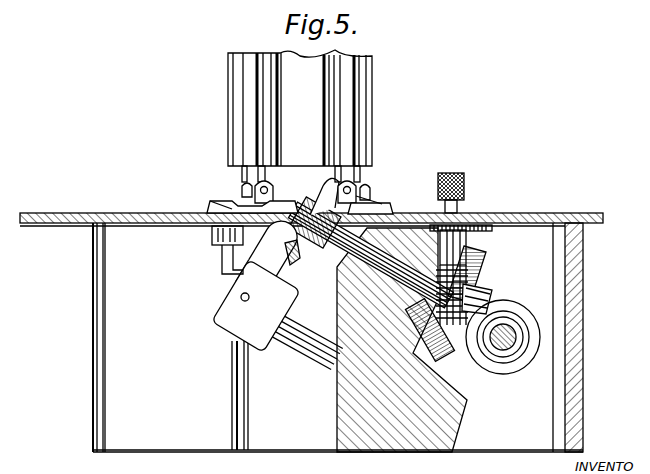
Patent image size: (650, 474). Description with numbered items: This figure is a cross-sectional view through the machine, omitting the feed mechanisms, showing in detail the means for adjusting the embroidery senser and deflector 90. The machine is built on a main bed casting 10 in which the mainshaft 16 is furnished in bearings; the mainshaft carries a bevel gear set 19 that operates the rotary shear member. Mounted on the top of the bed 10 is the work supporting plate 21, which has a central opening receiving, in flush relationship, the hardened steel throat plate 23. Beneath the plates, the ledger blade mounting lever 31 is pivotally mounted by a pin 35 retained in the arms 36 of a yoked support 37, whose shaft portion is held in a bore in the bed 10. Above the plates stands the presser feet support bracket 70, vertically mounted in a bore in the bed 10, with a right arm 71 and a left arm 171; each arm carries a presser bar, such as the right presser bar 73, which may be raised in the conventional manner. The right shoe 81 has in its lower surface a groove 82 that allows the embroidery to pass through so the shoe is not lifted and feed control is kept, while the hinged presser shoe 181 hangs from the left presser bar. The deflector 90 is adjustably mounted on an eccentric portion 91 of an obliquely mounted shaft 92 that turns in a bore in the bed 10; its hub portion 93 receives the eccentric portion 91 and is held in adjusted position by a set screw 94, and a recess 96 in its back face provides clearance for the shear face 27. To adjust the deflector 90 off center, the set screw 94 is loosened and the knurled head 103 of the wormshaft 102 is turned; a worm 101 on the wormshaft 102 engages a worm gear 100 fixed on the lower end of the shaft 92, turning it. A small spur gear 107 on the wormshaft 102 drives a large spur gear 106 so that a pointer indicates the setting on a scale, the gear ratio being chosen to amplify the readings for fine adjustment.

The main bed casting 10 is at (420, 450).
The mainshaft 16 is at (507, 346).
The bevel gear set 19 is at (500, 305).
The work supporting plate 21 is at (553, 213).
The throat plate 23 is at (200, 212).
The shear face 27 is at (280, 256).
The ledger blade mounting lever 31 is at (268, 243).
The pin 35 is at (240, 297).
The arms 36 is at (222, 331).
The yoked support 37 is at (292, 306).
The presser feet support bracket 70 is at (300, 108).
The right arm 71 is at (233, 90).
The presser bar 73 is at (268, 181).
The right shoe 81 is at (241, 203).
The groove 82 is at (225, 205).
The embroidery senser and deflector 90 is at (323, 187).
The eccentric portion 91 is at (298, 250).
The shaft 92 is at (396, 262).
The hub portion 93 is at (330, 250).
The set screw 94 is at (360, 207).
The recess 96 is at (358, 183).
The worm gear 100 is at (488, 266).
The worm 101 is at (461, 347).
The wormshaft 102 is at (460, 207).
The knurled head 103 is at (452, 173).
The large spur gear 106 is at (480, 232).
The small spur gear 107 is at (462, 216).
The left arm 171 is at (366, 118).
The presser shoe 181 is at (355, 198).